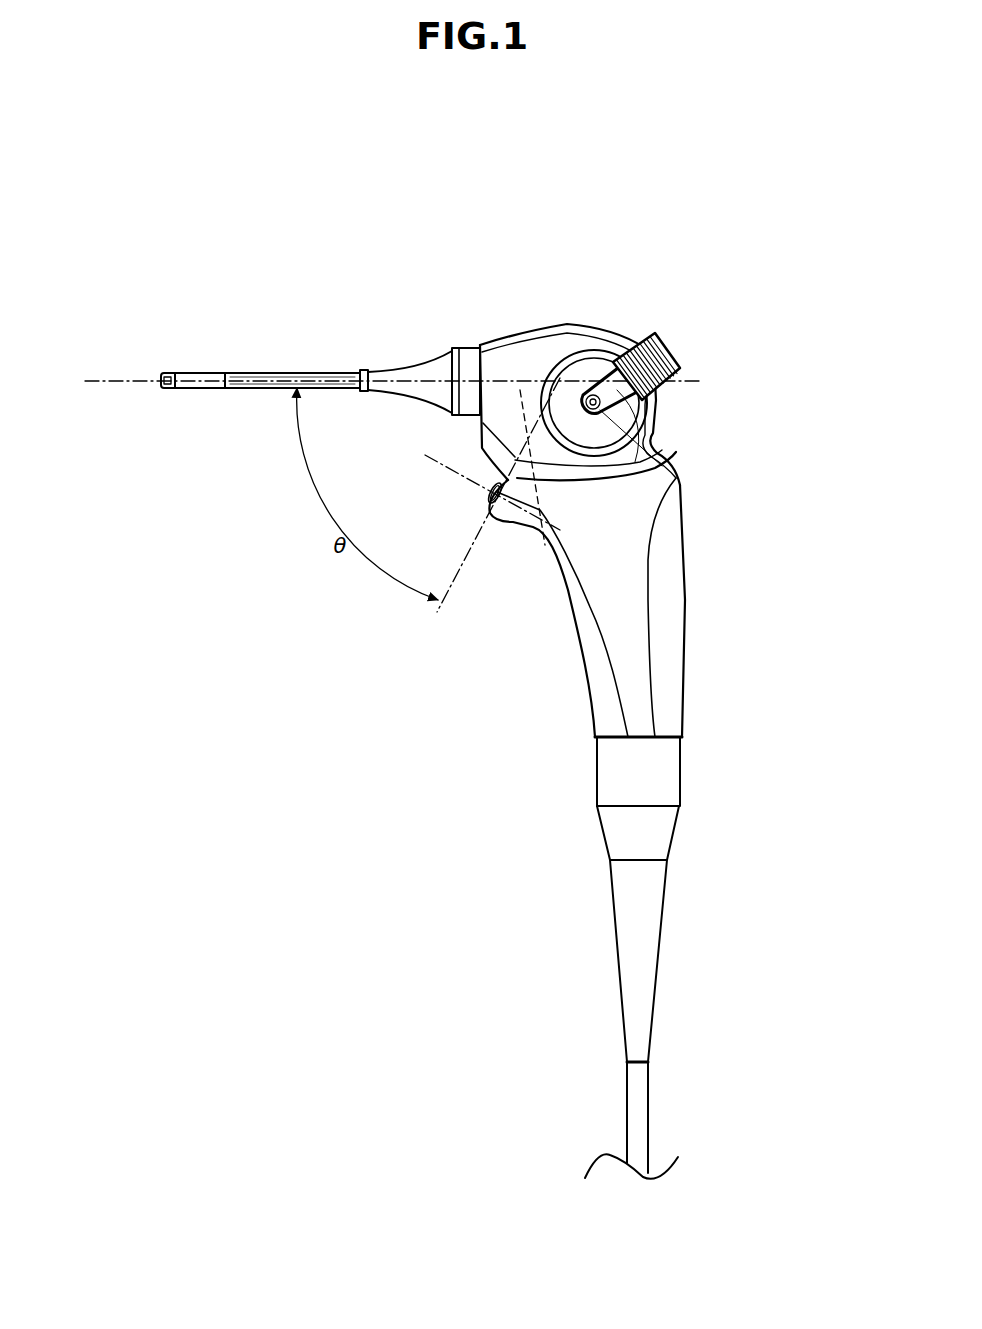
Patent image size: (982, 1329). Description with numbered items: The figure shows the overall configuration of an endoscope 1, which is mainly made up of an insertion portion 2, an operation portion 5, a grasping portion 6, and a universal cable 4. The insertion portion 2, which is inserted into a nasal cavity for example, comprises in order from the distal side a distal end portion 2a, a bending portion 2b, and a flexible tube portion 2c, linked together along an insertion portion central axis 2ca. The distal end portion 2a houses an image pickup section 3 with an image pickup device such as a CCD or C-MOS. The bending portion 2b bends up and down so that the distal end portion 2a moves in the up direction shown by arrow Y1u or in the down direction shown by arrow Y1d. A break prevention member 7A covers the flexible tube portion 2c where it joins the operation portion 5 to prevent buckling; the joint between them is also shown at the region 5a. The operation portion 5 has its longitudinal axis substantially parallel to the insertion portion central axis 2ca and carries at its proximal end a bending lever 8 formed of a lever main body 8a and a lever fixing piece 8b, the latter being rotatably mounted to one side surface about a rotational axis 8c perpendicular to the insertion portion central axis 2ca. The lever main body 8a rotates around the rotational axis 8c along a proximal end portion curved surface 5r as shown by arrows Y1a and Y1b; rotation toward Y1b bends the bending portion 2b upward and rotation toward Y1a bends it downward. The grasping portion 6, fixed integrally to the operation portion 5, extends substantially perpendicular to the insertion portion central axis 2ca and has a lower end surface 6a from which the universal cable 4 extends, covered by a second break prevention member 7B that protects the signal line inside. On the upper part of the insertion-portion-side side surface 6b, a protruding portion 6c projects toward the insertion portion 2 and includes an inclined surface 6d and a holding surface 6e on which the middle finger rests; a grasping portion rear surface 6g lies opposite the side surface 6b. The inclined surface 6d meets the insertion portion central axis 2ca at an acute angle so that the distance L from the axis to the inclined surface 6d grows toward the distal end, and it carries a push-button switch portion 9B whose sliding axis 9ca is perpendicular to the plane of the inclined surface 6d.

The endoscope 1 is at (838, 176).
The insertion portion 2 is at (280, 208).
The distal end portion 2a is at (168, 373).
The bending portion 2b is at (195, 373).
The flexible tube portion 2c is at (273, 373).
The insertion portion central axis 2ca is at (97, 383).
The image pickup section 3 is at (168, 392).
The universal cable 4 is at (637, 1118).
The operation portion 5 is at (556, 345).
The connecting portion of operation section 5a is at (470, 357).
The proximal end portion curved surface 5r is at (627, 340).
The grasping portion 6 is at (665, 602).
The lower end surface 6a is at (657, 737).
The insertion-portion-side side surface 6b is at (569, 661).
The protruding portion 6c is at (555, 650).
The inclined surface 6d is at (470, 503).
The holding surface 6e is at (500, 532).
The grasping portion rear surface 6g is at (688, 635).
The break prevention member 7A is at (410, 347).
The break prevention member 7B is at (575, 875).
The bending lever 8 is at (751, 378).
The lever main body 8a is at (673, 342).
The lever fixing piece 8b is at (650, 438).
The rotational axis 8c is at (660, 478).
The switch portion 9B is at (482, 508).
The sliding axis 9ca is at (460, 480).
The distance L is at (505, 478).
The arrow Y1u is at (160, 430).
The arrow Y1d is at (134, 439).
The arrow Y1a is at (622, 338).
The arrow Y1b is at (677, 385).